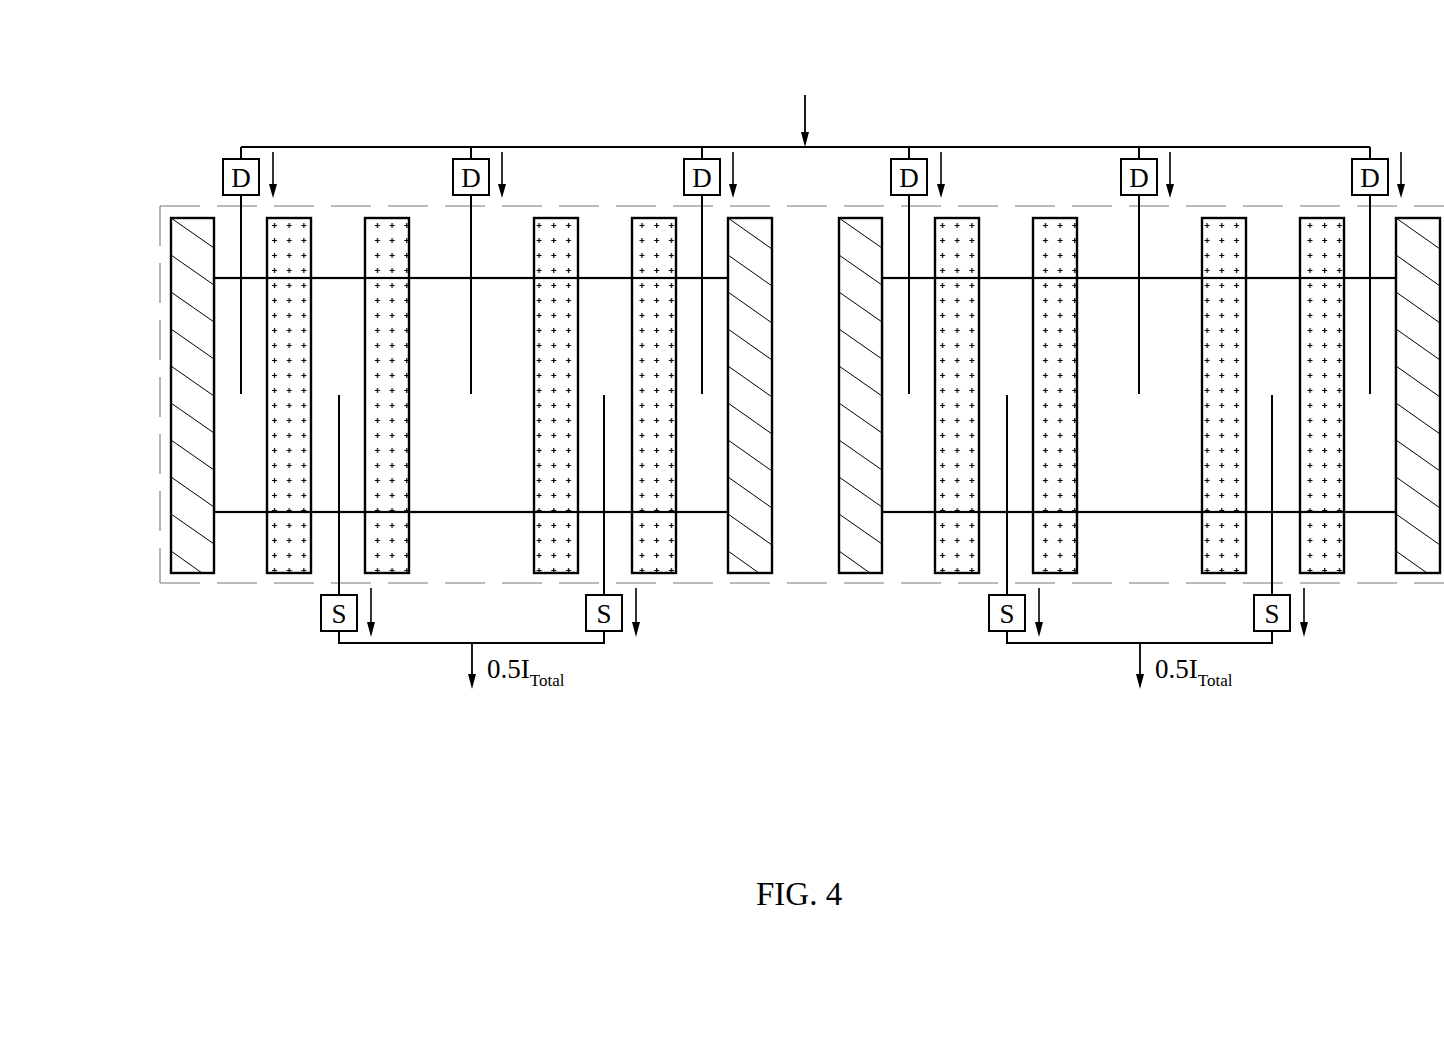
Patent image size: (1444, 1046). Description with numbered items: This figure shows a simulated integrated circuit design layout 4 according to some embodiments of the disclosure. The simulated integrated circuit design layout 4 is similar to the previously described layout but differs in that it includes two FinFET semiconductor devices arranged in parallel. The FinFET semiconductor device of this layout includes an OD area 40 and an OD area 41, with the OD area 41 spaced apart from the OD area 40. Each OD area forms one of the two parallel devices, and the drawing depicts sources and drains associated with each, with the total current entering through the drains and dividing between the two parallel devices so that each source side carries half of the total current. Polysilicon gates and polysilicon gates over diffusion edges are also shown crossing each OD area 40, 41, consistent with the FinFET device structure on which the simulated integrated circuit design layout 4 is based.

The simulated integrated circuit design layout 4 is at (148, 68).
The OD area 40 is at (472, 493).
The OD area 41 is at (1137, 493).